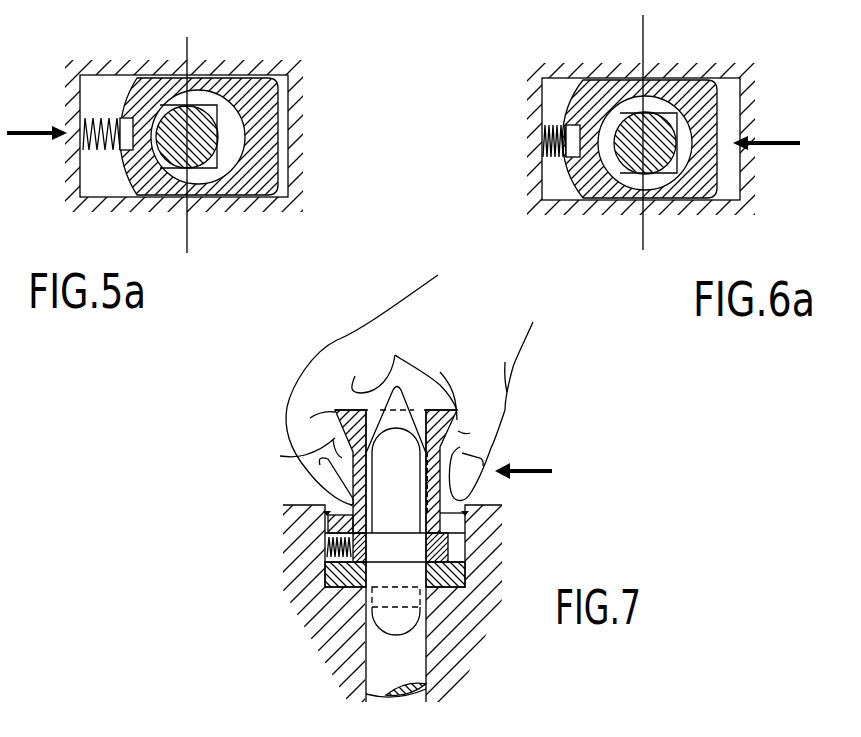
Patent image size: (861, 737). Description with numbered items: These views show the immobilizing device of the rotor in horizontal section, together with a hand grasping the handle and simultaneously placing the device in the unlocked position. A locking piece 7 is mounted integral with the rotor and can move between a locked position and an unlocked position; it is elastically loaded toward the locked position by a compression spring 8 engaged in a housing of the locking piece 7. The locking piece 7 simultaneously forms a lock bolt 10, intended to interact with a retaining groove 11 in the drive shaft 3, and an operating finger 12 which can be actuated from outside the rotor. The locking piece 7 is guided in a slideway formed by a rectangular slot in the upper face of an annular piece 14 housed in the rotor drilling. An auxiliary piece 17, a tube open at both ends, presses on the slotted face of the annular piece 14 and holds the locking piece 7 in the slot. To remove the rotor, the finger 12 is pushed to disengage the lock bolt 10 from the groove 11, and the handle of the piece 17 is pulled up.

In FIG. 5a, the drive shaft 3 is at (230, 157).
In FIG. 6a, the drive shaft 3 is at (632, 110).
In FIG. 7, the drive shaft 3 is at (417, 668).
In FIG. 5a, the locking piece 7 is at (263, 115).
In FIG. 6a, the locking piece 7 is at (698, 115).
In FIG. 5a, the compression spring 8 is at (78, 162).
In FIG. 6a, the compression spring 8 is at (538, 168).
In FIG. 5a, the lock bolt 10 is at (123, 98).
In FIG. 6a, the lock bolt 10 is at (575, 84).
In FIG. 7, the lock bolt 10 is at (448, 553).
In FIG. 5a, the retaining groove 11 is at (218, 138).
In FIG. 6a, the retaining groove 11 is at (607, 116).
In FIG. 7, the operating finger 12 is at (445, 506).
In FIG. 7, the annular piece 14 is at (468, 573).
In FIG. 7, the auxiliary piece 17 is at (338, 441).